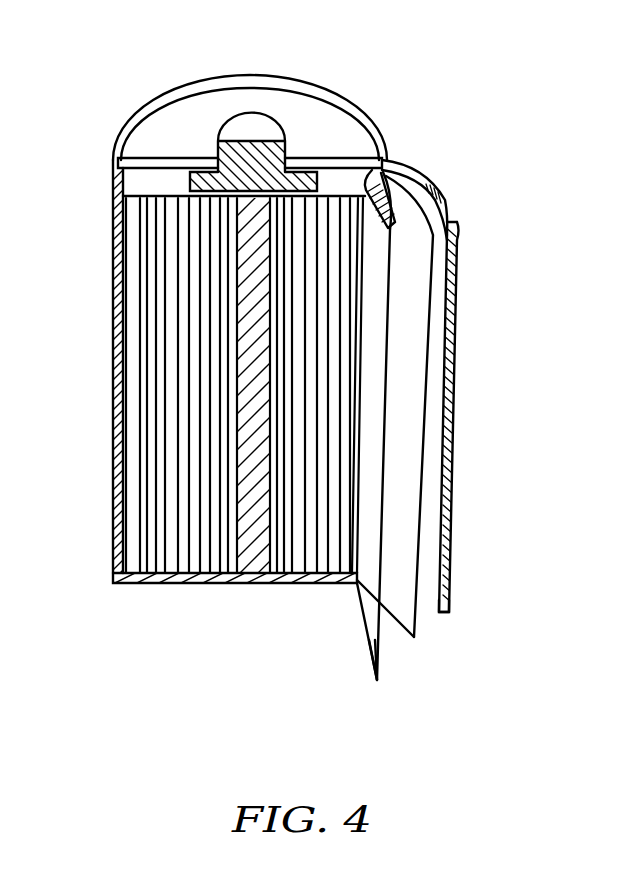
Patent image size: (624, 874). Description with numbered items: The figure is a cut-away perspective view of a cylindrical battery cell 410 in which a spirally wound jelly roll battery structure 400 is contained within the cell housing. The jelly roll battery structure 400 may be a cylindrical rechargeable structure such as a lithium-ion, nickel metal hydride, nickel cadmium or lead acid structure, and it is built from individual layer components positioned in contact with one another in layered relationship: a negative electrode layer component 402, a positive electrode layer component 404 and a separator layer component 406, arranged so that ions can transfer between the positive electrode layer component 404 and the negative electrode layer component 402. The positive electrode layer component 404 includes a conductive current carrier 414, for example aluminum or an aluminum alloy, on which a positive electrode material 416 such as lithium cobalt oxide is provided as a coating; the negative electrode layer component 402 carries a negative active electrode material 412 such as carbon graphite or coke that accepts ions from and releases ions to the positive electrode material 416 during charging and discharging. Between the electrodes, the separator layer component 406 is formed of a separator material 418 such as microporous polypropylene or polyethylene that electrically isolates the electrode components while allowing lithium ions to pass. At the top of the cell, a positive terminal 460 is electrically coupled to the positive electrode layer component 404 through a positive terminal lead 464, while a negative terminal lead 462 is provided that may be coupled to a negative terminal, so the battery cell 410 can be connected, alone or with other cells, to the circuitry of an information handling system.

The spirally wound battery structure 400 is at (185, 247).
The negative electrode layer component 402 is at (440, 616).
The positive electrode layer component 404 is at (367, 605).
The separator layer component 406 is at (370, 637).
The cylindrical battery cell 410 is at (113, 405).
The negative active electrode material 412 is at (428, 182).
The conductive current carrier 414 is at (380, 680).
The positive electrode material 416 is at (388, 205).
The separator material 418 is at (417, 640).
The positive terminal 460 is at (250, 127).
The negative terminal lead 462 is at (458, 257).
The positive terminal lead 464 is at (162, 183).